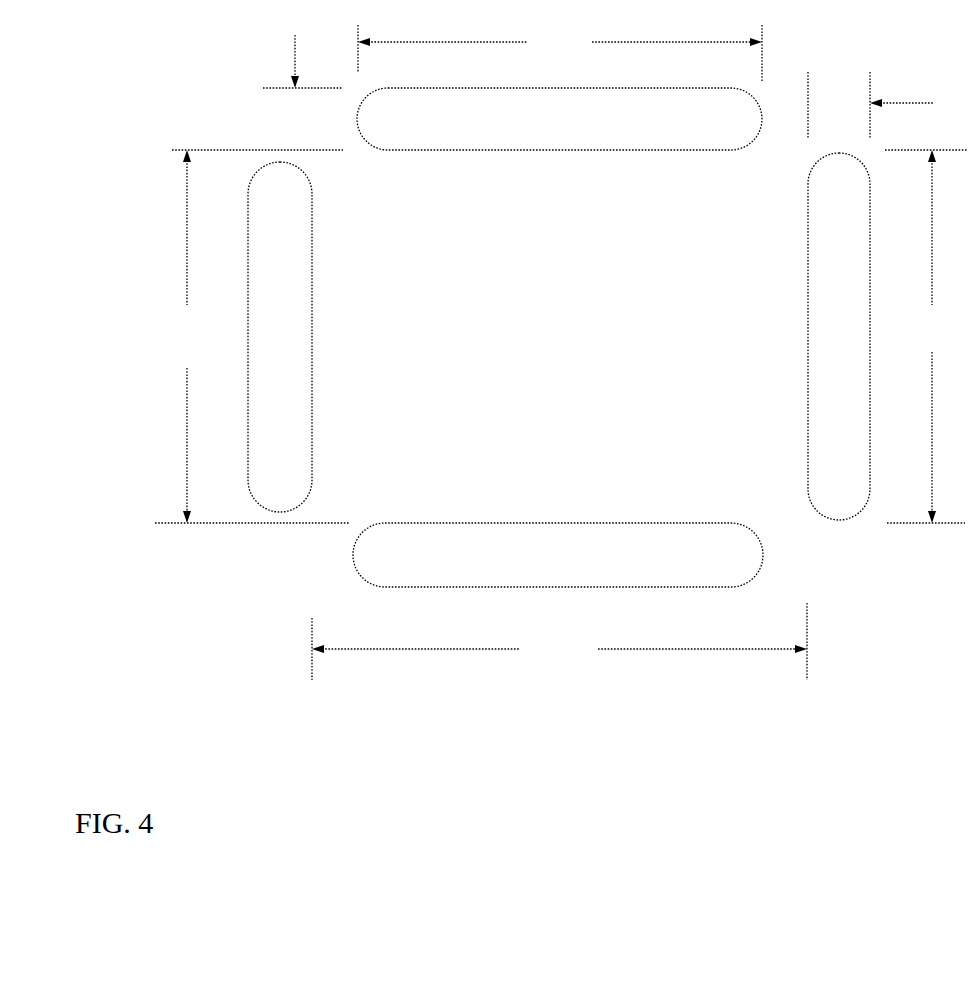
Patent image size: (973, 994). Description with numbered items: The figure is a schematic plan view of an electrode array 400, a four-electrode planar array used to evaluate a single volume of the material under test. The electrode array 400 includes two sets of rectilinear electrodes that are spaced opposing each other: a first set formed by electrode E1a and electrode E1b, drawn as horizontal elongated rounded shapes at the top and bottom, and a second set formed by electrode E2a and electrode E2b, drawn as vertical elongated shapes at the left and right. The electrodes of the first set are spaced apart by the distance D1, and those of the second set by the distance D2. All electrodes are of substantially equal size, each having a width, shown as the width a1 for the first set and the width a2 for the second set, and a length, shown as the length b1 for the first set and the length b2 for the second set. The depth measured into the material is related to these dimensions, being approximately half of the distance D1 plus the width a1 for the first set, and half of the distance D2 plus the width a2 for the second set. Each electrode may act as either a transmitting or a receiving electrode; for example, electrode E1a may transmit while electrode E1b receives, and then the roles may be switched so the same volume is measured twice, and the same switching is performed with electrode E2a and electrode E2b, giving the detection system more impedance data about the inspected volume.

The electrode array 400 is at (214, 77).
The first electrode of first set E1a is at (559, 119).
The second electrode of first set E1b is at (558, 555).
The first electrode of second set E2a is at (280, 337).
The second electrode of second set E2b is at (839, 336).
The first electrode spacing distance D1 is at (252, 336).
The second electrode spacing distance D2 is at (559, 641).
The first electrode width a1 is at (257, 92).
The second electrode width a2 is at (870, 105).
The first electrode length b1 is at (560, 53).
The second electrode length b2 is at (926, 336).